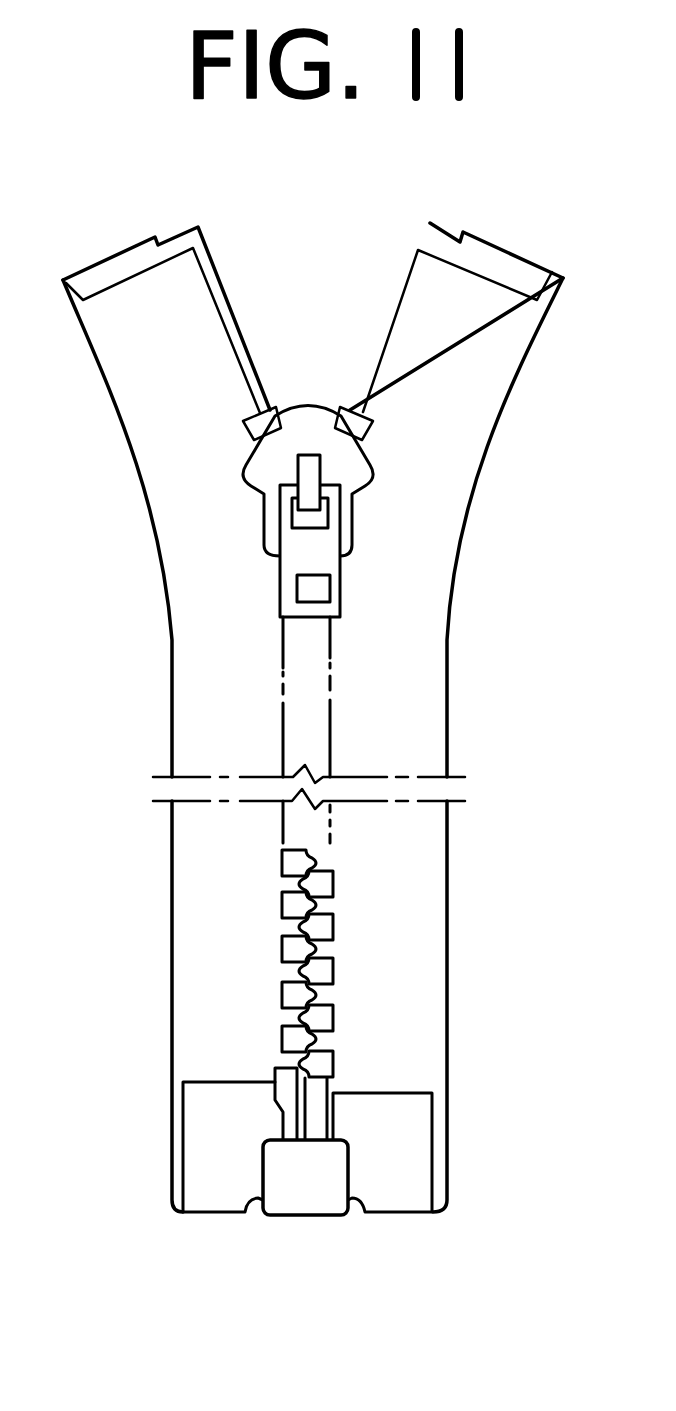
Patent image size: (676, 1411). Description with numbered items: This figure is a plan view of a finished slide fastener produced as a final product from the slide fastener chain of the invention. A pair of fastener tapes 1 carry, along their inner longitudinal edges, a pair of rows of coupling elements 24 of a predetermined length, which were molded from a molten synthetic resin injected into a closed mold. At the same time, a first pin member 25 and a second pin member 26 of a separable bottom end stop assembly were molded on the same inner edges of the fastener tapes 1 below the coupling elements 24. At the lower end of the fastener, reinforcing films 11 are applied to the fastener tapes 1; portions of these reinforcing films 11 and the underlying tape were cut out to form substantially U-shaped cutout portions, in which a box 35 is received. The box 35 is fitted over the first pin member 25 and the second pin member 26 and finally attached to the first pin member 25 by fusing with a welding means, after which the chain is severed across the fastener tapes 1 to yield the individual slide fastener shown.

The fastener tapes 1 is at (75, 575).
The reinforcing films 11 is at (75, 1118).
The coupling elements 24 is at (343, 1043).
The first pin member 25 is at (317, 1100).
The second pin member 26 is at (222, 1080).
The box 35 is at (300, 1197).